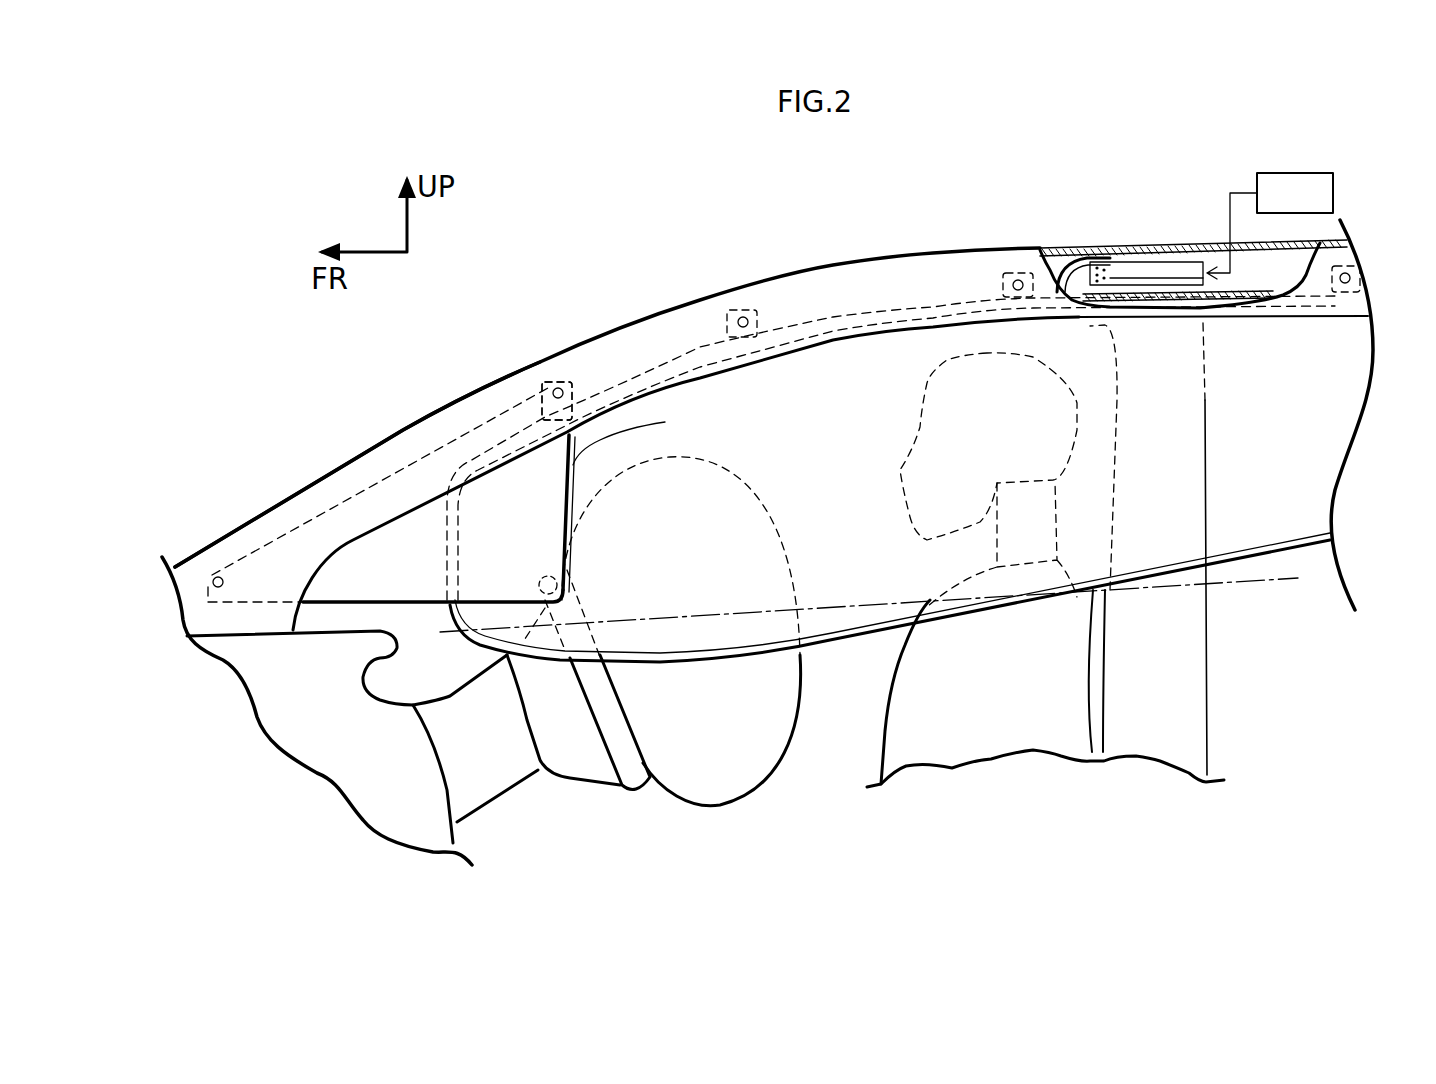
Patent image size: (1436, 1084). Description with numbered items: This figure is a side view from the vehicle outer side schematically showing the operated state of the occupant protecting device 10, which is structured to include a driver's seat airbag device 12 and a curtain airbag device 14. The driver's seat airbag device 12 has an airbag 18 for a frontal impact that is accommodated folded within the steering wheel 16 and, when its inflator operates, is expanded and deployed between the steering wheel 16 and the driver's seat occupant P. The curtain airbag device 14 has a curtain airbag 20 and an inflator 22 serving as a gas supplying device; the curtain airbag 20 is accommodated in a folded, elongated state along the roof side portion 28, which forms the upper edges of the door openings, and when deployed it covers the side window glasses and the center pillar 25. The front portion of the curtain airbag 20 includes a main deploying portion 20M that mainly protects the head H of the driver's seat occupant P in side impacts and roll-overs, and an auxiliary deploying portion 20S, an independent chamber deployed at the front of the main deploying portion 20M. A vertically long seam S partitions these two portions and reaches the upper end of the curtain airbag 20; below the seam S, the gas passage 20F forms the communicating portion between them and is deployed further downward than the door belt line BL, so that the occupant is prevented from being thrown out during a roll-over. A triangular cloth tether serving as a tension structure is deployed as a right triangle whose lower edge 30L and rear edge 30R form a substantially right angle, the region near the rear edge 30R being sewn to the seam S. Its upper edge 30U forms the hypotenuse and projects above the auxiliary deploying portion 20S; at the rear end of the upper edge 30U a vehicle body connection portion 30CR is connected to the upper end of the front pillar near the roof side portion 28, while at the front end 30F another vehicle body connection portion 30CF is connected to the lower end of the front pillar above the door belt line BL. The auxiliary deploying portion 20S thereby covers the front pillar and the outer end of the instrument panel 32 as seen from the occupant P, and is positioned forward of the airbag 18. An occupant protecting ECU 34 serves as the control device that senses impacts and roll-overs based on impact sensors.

The occupant protecting device 10 is at (863, 793).
The driver's seat airbag device 12 is at (737, 832).
The curtain airbag device 14 is at (1168, 172).
The steering wheel 16 is at (634, 792).
The airbag for a frontal impact 18 is at (778, 770).
The curtain airbag 20 is at (912, 350).
The gas passage 20F is at (550, 637).
The main deploying portion 20M is at (847, 360).
The auxiliary deploying portion 20S is at (548, 380).
The inflator 22 is at (1163, 270).
The center pillar 25 is at (1185, 730).
The roof side portion 28 is at (1200, 253).
The upper edge 30U is at (330, 500).
The lower edge 30L is at (348, 605).
The front end 30F is at (217, 577).
The rear edge 30R is at (570, 512).
The vehicle body connection portion 30CF is at (213, 575).
The vehicle body connection portion 30CR is at (563, 385).
The instrument panel 32 is at (385, 800).
The occupant protecting ECU 34 is at (1313, 173).
The seam S is at (631, 434).
The head H is at (1037, 388).
The driver's seat occupant P is at (883, 683).
The door belt line BL is at (1298, 578).